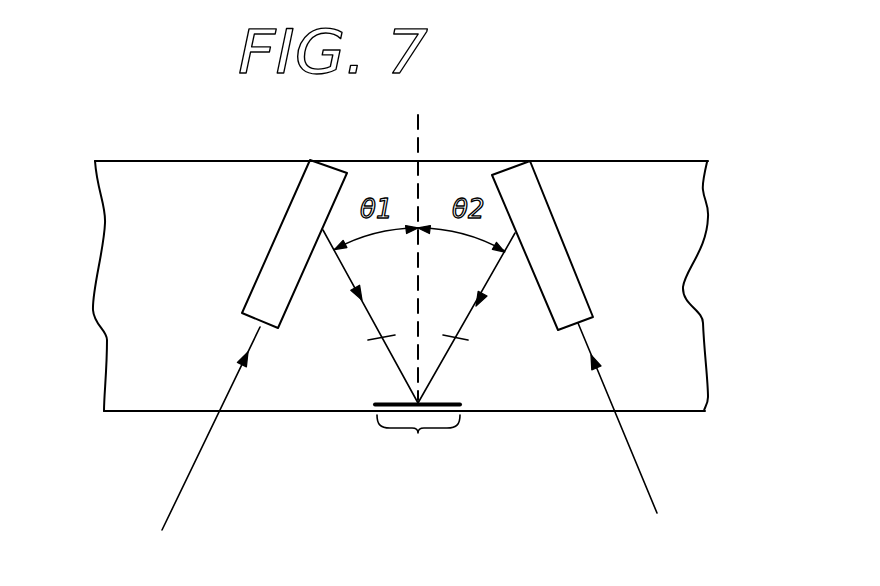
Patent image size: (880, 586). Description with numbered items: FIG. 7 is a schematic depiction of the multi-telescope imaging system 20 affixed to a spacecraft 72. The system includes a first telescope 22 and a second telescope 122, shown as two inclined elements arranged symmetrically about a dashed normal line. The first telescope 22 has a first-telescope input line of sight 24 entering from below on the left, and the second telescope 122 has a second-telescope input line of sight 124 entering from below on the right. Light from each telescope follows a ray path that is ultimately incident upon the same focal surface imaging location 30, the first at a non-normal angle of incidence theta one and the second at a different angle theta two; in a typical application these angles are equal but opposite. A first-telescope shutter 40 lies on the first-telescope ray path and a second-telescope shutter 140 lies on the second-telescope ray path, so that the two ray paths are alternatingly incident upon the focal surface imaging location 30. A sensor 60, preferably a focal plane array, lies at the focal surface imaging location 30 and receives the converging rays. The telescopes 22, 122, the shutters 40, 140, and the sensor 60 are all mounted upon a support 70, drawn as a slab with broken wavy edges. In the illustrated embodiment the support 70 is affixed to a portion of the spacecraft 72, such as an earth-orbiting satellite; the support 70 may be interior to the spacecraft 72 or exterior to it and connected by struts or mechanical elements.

The multi-telescope imaging system 20 is at (170, 140).
The first telescope 22 is at (293, 197).
The second telescope 122 is at (540, 191).
The first-telescope input line of sight 24 is at (177, 490).
The second-telescope input line of sight 124 is at (648, 487).
The first-telescope shutter 40 is at (374, 342).
The second-telescope shutter 140 is at (463, 343).
The sensor 60 is at (392, 402).
The focal surface imaging location 30 is at (418, 441).
The support 70 is at (123, 413).
The spacecraft 72 is at (660, 161).